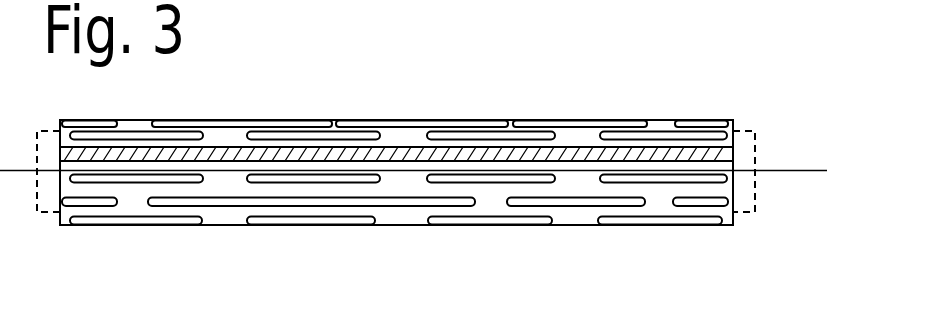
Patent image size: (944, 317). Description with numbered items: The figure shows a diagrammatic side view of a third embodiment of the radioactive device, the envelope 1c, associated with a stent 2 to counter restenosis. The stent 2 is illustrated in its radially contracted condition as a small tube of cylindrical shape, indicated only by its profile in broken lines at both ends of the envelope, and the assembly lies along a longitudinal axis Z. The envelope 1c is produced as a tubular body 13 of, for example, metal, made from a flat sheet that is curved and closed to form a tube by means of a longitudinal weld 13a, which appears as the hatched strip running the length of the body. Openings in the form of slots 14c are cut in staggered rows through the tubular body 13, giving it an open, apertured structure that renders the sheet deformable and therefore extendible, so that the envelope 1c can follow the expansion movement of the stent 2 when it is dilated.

The longitudinal weld 13a is at (227, 148).
The slots 14c is at (410, 204).
The envelope 1c is at (562, 221).
The tubular body 13 is at (622, 224).
The stent 2 is at (748, 215).
The axis Z is at (425, 173).